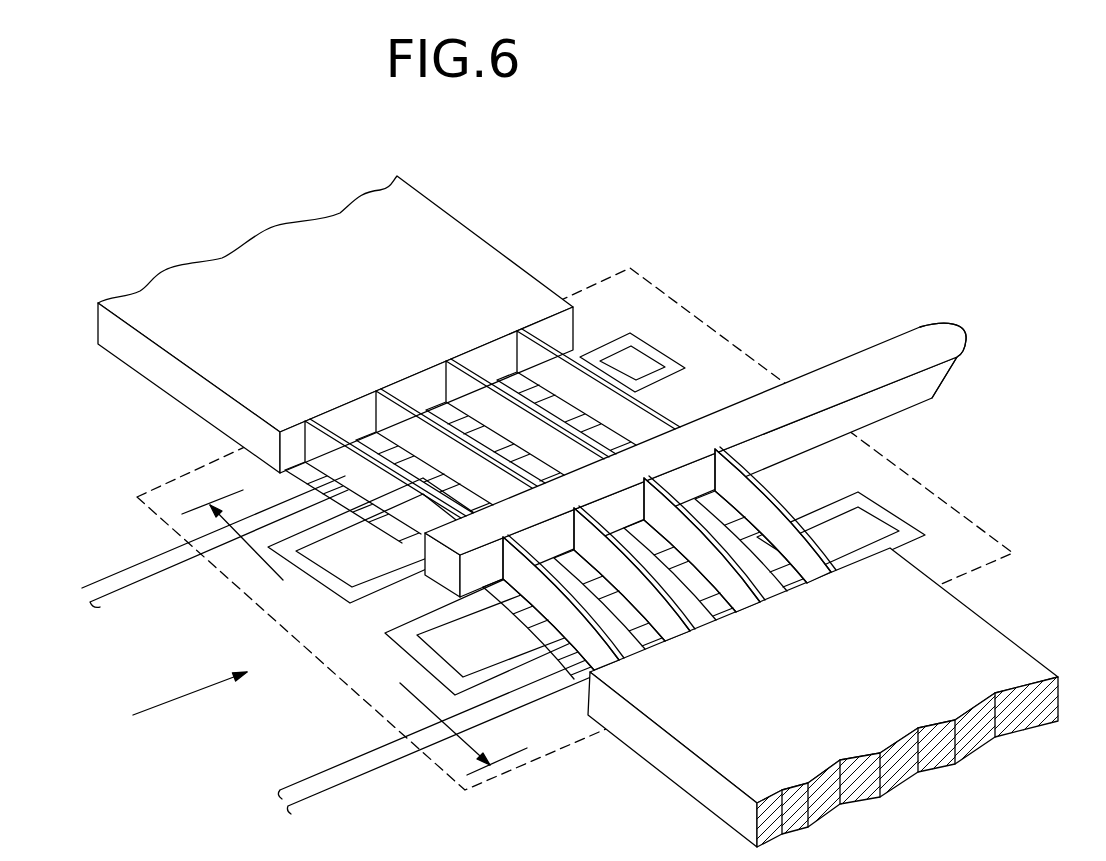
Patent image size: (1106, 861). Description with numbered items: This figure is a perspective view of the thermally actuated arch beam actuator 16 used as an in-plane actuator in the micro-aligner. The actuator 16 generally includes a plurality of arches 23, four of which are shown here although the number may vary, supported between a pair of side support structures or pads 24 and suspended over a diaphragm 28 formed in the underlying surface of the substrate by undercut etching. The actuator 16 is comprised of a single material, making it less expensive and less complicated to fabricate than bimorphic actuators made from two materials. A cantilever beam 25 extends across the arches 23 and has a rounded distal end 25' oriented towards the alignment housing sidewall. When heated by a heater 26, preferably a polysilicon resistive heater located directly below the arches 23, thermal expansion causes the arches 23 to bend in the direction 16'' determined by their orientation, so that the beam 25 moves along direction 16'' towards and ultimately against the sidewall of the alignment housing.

The thermally actuated arch beam actuator 16 is at (765, 209).
The direction of bending 16'' is at (340, 649).
The arches 23 is at (576, 356).
The side support structures or pads 24 is at (160, 360).
The cantilever beam 25 is at (652, 482).
The rounded distal end 25' is at (971, 336).
The heater 26 is at (880, 503).
The diaphragm 28 is at (735, 343).